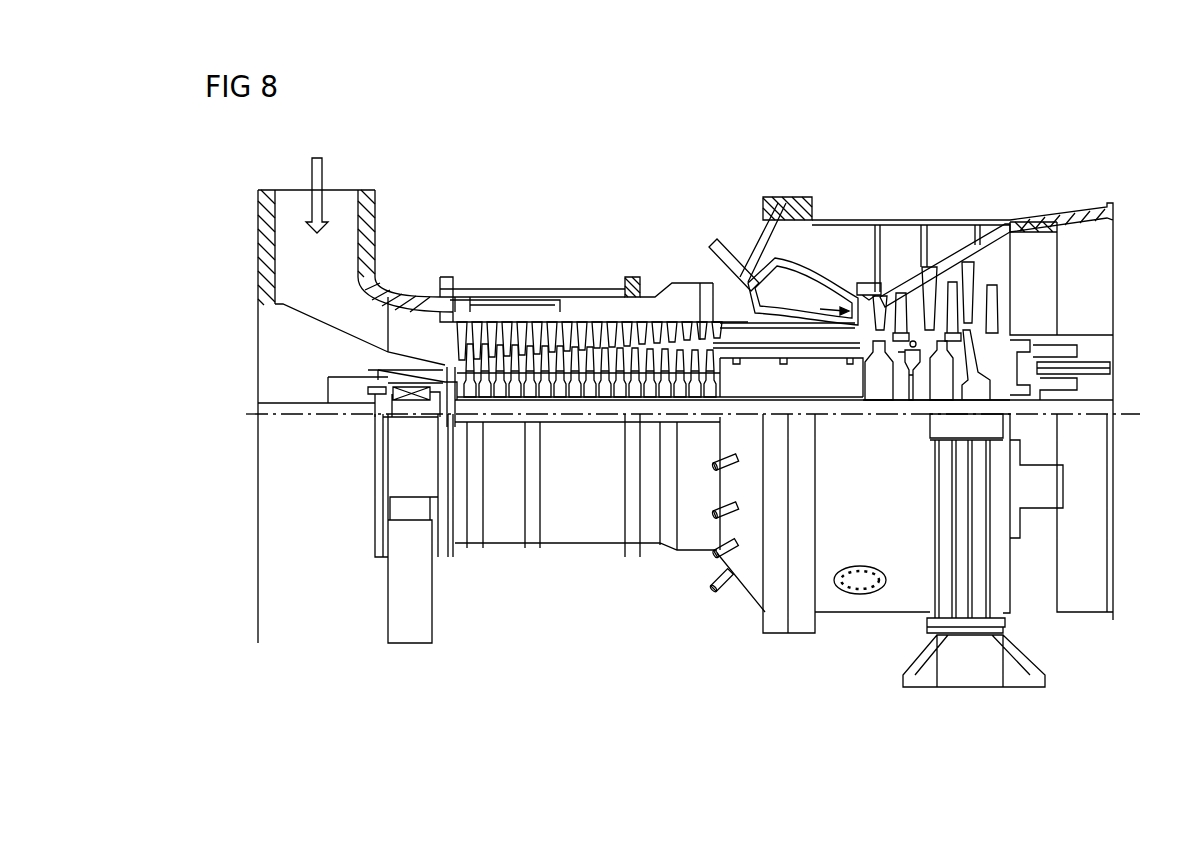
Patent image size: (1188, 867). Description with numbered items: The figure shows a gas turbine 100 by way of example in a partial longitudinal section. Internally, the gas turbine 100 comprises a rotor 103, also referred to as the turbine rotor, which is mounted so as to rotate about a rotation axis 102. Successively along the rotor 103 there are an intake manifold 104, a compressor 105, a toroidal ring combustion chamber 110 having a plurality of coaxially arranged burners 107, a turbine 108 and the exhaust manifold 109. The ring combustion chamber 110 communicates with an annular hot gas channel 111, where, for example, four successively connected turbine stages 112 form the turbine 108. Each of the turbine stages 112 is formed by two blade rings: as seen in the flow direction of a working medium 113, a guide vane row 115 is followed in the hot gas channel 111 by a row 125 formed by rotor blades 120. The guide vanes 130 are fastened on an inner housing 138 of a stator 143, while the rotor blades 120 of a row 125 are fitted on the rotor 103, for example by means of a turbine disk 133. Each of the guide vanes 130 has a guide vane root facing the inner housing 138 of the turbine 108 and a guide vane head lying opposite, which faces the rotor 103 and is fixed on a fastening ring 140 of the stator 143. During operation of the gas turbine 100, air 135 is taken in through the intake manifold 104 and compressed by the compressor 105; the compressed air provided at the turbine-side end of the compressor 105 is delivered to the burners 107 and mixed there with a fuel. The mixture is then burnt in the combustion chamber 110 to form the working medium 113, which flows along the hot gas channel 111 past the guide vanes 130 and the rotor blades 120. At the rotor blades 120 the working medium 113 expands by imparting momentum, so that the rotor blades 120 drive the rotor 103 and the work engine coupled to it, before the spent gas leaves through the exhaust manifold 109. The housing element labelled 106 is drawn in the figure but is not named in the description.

The gas turbine 100 is at (575, 198).
The rotation axis 102 is at (252, 416).
The rotor 103 is at (717, 400).
The intake manifold 104 is at (376, 238).
The compressor 105 is at (515, 273).
The combustion chamber housing 106 is at (805, 295).
The burners 107 is at (713, 245).
The turbine 108 is at (879, 194).
The exhaust manifold 109 is at (1040, 225).
The combustion chamber 110 is at (782, 262).
The hot gas channel 111 is at (990, 283).
The turbine stages 112 is at (972, 194).
The working medium 113 is at (785, 262).
The guide vane row 115 is at (946, 248).
The rotor blades 120 is at (907, 348).
The row 125 is at (990, 230).
The guide vanes 130 is at (885, 345).
The turbine disk 133 is at (967, 383).
The air 135 is at (322, 183).
The inner housing 138 is at (905, 256).
The fastening ring 140 is at (856, 332).
The stator 143 is at (855, 290).